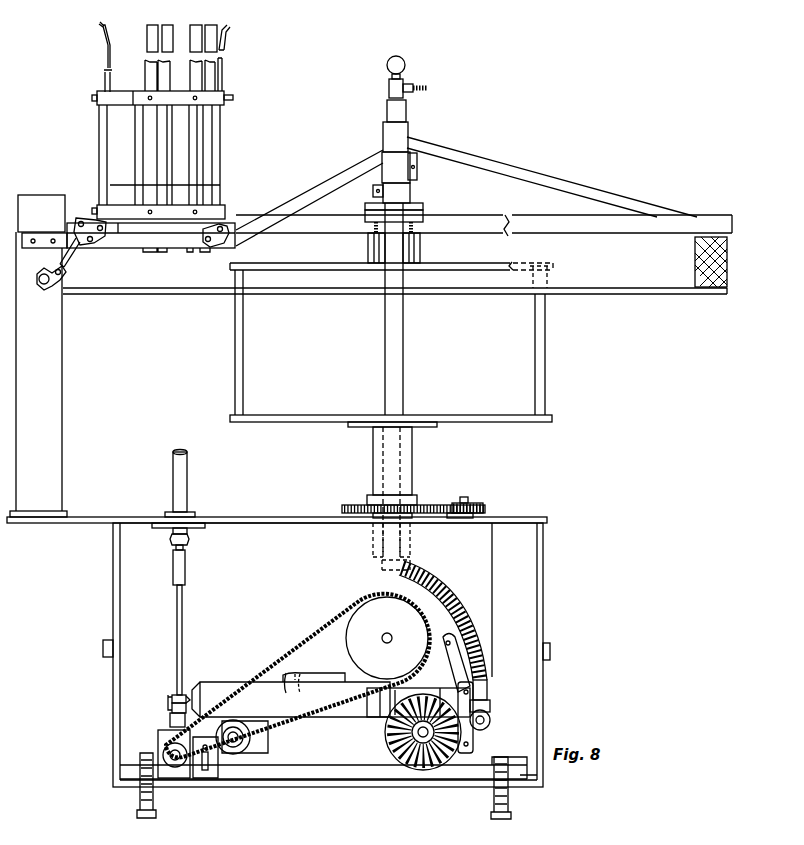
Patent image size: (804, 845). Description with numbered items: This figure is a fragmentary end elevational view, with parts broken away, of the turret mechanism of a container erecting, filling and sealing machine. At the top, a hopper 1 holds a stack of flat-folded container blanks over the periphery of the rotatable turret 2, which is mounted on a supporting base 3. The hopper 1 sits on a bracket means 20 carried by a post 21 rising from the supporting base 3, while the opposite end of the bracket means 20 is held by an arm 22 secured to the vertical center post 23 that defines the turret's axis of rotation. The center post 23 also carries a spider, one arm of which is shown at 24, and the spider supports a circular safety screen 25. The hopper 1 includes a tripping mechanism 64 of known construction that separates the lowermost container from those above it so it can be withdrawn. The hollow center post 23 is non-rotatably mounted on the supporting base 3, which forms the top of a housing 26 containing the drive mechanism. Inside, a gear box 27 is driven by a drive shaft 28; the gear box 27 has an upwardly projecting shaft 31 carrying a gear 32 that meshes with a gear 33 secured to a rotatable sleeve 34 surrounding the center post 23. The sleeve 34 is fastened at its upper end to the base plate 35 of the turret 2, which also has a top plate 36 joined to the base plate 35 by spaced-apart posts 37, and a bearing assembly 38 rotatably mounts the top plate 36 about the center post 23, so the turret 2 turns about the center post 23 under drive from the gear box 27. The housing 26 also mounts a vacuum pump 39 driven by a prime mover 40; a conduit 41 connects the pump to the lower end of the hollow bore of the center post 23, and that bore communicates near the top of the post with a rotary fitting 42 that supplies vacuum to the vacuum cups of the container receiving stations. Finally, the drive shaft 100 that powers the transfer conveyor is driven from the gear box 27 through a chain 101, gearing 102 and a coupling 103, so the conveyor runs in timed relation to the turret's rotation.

The hopper 1 is at (222, 176).
The turret 2 is at (556, 399).
The supporting base 3 is at (530, 523).
The bracket means 20 is at (127, 238).
The post 21 is at (60, 370).
The arm 22 is at (328, 187).
The center post 23 is at (400, 353).
The spider arm 24 is at (570, 186).
The safety screen 25 is at (722, 266).
The housing 26 is at (540, 584).
The gear box 27 is at (488, 570).
The drive shaft 28 is at (388, 633).
The upwardly projecting shaft 31 is at (465, 498).
The gear 32 is at (483, 507).
The gear 33 is at (342, 505).
The rotatable sleeve 34 is at (410, 470).
The base plate 35 is at (437, 417).
The top plate 36 is at (442, 268).
The posts 37 is at (242, 367).
The bearing assembly 38 is at (368, 245).
The vacuum pump 39 is at (467, 747).
The prime mover 40 is at (256, 741).
The conduit 41 is at (443, 588).
The rotary fitting 42 is at (413, 203).
The tripping mechanism 64 is at (68, 270).
The drive shaft 100 is at (182, 488).
The chain 101 is at (257, 673).
The gearing 102 is at (167, 730).
The coupling 103 is at (182, 604).